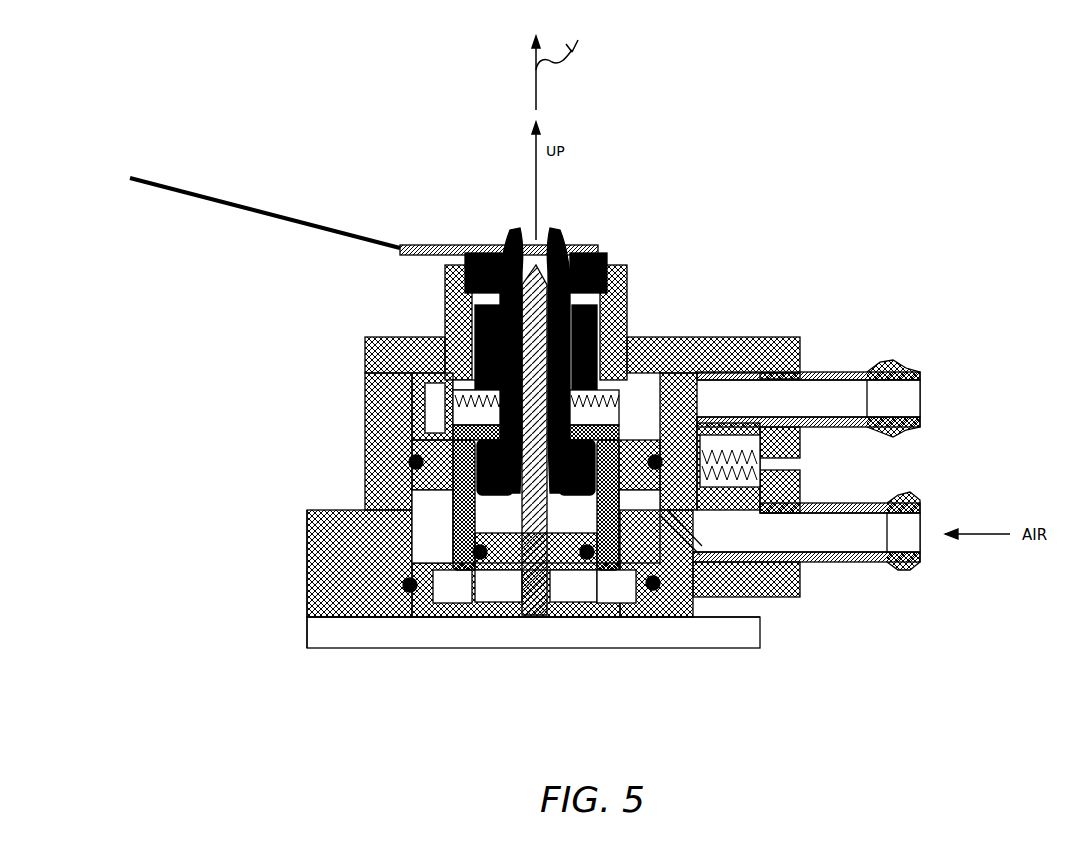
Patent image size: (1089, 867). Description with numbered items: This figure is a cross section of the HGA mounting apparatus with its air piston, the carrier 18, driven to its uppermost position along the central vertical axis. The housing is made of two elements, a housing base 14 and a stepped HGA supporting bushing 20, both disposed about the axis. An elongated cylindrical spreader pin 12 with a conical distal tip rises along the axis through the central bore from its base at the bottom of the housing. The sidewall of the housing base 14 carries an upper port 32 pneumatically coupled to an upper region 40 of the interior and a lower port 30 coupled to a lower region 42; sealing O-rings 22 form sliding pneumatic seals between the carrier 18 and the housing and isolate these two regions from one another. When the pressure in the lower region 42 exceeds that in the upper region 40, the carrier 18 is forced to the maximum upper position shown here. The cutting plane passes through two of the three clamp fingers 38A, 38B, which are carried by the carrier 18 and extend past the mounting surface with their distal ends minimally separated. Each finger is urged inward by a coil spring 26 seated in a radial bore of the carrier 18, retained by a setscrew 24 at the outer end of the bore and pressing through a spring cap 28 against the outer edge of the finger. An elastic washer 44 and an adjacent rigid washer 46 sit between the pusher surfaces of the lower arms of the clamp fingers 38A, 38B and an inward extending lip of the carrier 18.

The spreader pin 12 is at (538, 617).
The housing base 14 is at (290, 550).
The carrier 18 is at (780, 580).
The HGA supporting bushing 20 is at (598, 256).
The sealing O-rings 22 is at (592, 320).
The setscrew 24 is at (365, 418).
The coil spring 26 is at (365, 345).
The spring cap 28 is at (445, 340).
The lower port 30 is at (825, 540).
The upper port 32 is at (815, 400).
The clamp finger 38A is at (548, 232).
The clamp finger 38B is at (512, 232).
The upper region 40 is at (640, 332).
The lower region 42 is at (370, 617).
The elastic washer 44 is at (363, 463).
The rigid washer 46 is at (363, 500).